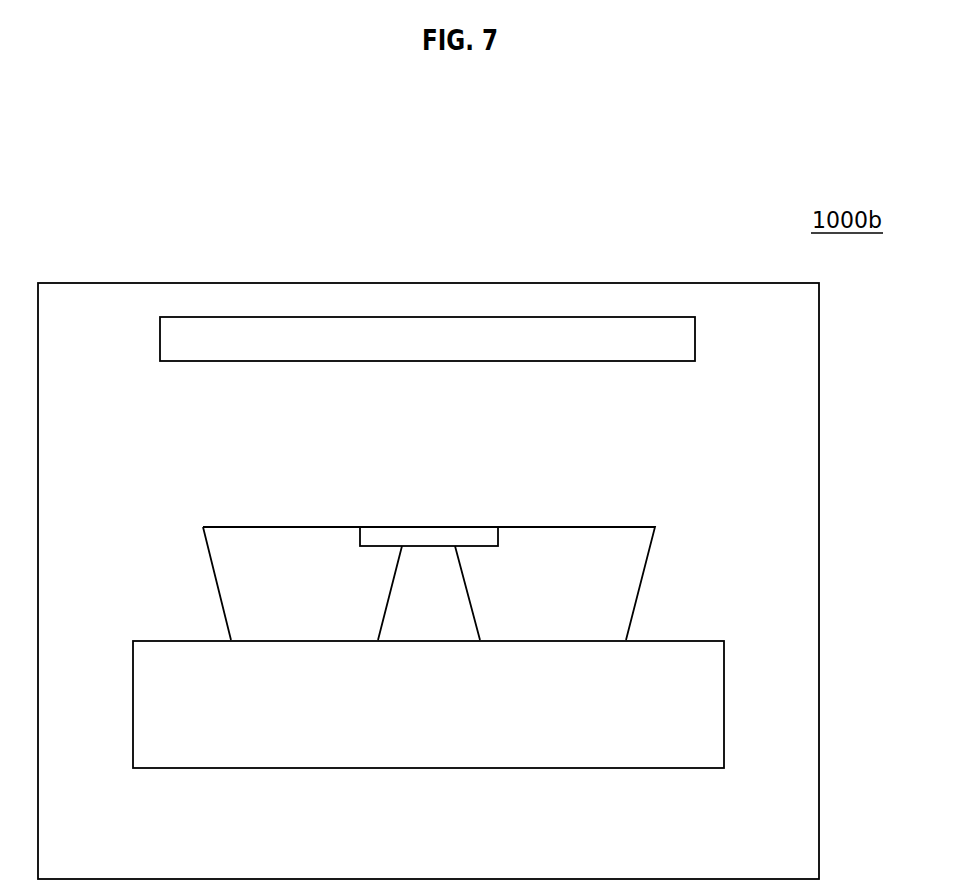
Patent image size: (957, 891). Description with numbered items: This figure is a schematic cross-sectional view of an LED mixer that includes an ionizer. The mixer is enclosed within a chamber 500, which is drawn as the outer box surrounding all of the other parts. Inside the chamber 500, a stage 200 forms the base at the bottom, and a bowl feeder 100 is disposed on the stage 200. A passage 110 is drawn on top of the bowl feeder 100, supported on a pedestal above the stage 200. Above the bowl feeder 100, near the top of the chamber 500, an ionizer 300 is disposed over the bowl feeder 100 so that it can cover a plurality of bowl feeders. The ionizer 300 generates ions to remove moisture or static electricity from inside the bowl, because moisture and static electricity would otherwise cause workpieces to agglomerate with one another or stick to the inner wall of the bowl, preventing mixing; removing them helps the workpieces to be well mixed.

The chamber 500 is at (807, 478).
The ionizer 300 is at (685, 340).
The stage 200 is at (710, 706).
The bowl feeder 100 is at (297, 536).
The passage 110 is at (427, 534).